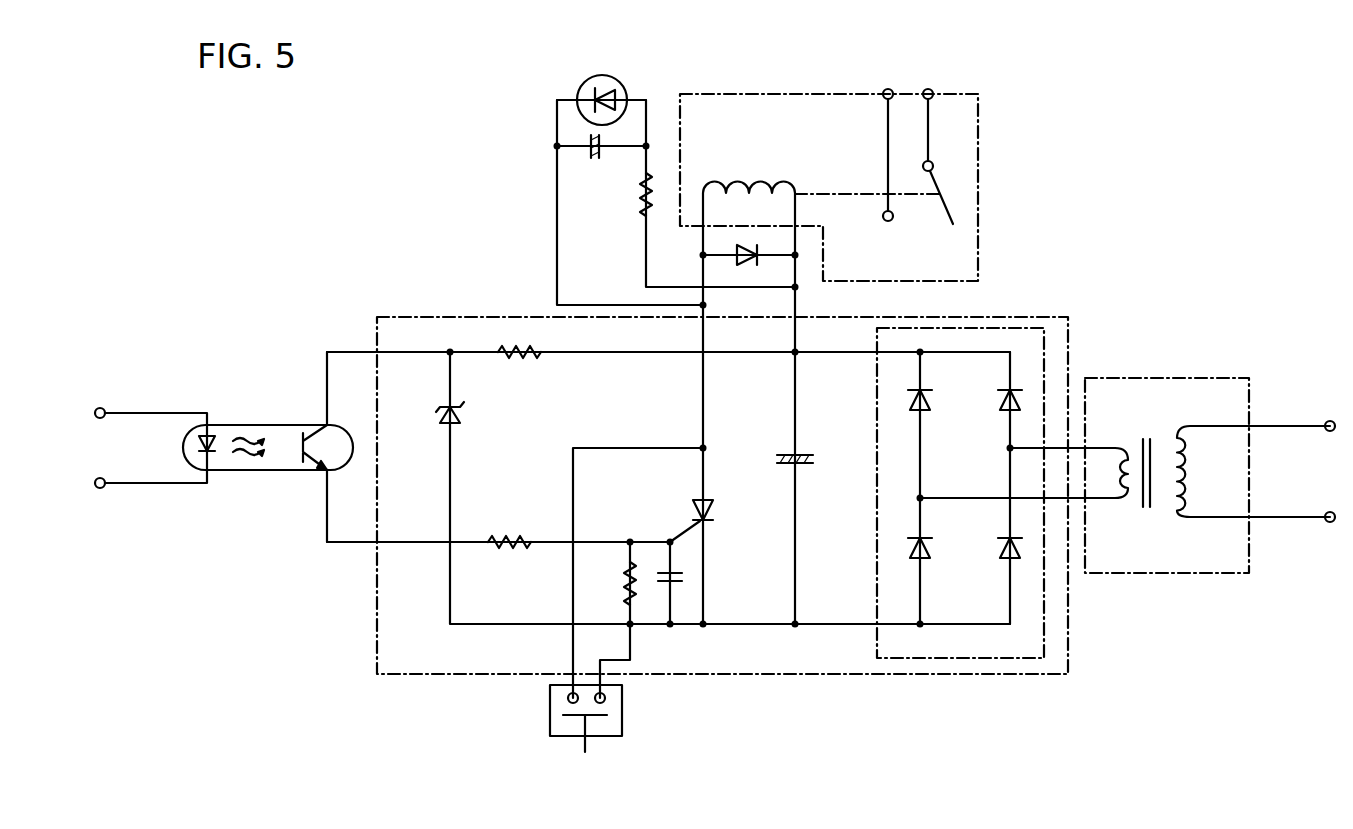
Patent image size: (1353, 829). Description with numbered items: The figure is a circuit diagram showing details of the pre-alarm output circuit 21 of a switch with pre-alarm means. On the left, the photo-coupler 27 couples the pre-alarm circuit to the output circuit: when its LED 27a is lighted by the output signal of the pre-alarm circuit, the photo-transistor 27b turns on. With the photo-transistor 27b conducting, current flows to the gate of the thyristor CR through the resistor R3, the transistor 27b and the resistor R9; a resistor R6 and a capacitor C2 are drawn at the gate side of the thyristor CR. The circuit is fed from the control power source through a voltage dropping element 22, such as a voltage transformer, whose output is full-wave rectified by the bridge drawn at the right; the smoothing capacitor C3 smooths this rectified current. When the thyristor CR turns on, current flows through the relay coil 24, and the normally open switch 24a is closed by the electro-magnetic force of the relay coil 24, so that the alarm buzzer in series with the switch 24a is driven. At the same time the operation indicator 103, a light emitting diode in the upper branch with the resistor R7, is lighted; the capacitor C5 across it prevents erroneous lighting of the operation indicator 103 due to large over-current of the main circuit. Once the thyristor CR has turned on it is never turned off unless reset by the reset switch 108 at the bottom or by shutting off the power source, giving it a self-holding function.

The pre-alarm output circuit 21 is at (1035, 313).
The voltage dropping element 22 is at (1168, 380).
The relay coil 24 is at (757, 183).
The switch 24a is at (930, 133).
The photo-coupler 27 is at (265, 425).
The LED 27a is at (228, 450).
The photo-transistor 27b is at (290, 465).
The operation indicator 103 is at (584, 80).
The reset switch 108 is at (622, 712).
The resistor R3 is at (521, 352).
The resistor R6 is at (632, 588).
The resistor R7 is at (642, 188).
The resistor R9 is at (512, 542).
The capacitor C2 is at (685, 582).
The smoothing capacitor C3 is at (788, 465).
The capacitor C5 is at (590, 152).
The thyristor CR is at (700, 505).